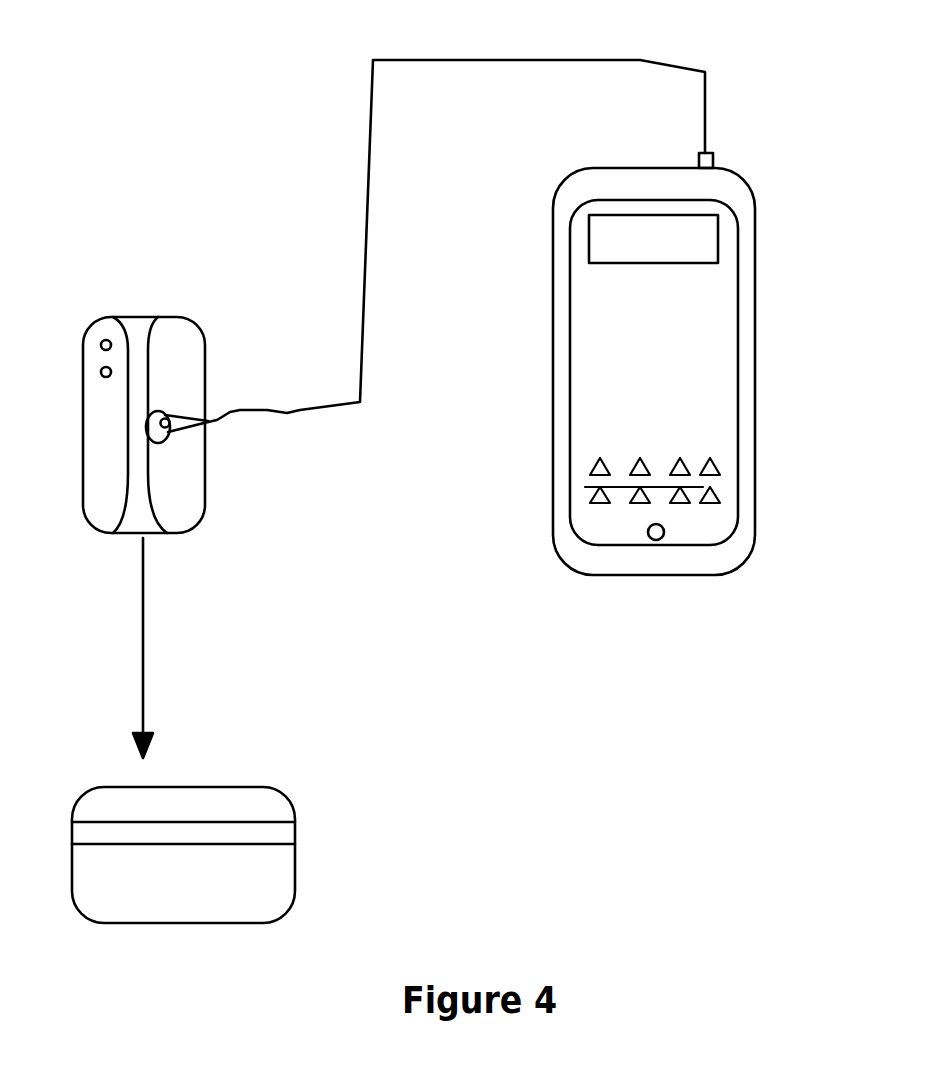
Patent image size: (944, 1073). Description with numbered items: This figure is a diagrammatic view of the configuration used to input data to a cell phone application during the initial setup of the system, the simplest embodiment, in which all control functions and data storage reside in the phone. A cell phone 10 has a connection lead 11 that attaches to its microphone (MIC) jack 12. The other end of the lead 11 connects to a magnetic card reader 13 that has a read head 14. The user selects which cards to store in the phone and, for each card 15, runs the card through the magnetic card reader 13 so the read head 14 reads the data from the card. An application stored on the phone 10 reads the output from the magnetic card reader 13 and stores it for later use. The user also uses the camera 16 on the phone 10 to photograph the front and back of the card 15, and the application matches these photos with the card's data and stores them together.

The cell phone 10 is at (712, 583).
The connection lead 11 is at (367, 138).
The microphone (MIC) jack 12 is at (713, 155).
The magnetic card reader 13 is at (225, 526).
The read head 14 is at (162, 411).
The card 15 is at (228, 783).
The camera 16 is at (650, 540).